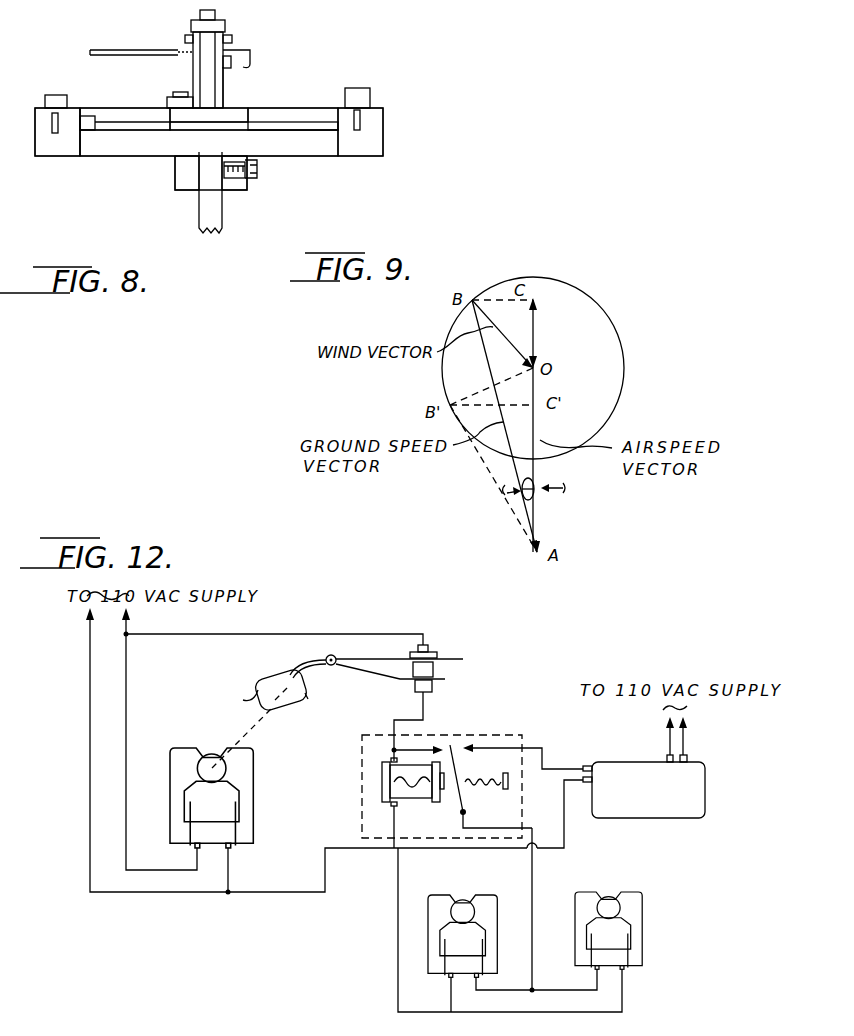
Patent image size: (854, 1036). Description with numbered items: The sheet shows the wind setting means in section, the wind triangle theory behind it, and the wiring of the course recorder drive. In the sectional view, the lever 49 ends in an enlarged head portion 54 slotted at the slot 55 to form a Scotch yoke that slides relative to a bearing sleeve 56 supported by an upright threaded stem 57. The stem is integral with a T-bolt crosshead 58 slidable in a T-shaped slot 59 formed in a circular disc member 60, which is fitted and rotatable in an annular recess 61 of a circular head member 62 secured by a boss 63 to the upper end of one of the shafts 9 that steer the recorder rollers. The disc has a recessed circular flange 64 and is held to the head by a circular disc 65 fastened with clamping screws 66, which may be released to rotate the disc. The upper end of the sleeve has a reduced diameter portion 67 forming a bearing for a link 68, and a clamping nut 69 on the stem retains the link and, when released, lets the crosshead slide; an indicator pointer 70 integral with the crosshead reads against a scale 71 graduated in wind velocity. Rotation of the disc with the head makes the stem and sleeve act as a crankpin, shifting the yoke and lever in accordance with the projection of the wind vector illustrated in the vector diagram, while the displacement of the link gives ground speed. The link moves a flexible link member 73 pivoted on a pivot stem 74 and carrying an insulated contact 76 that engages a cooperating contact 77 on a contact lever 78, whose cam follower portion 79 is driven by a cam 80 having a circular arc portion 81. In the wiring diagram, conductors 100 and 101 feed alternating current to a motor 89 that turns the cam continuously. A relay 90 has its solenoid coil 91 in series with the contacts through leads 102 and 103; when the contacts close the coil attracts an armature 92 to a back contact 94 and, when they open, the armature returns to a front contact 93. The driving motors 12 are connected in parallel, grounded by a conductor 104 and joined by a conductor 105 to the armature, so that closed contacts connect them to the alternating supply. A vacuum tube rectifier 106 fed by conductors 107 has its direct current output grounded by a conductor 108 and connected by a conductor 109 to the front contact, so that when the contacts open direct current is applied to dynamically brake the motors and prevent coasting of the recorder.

In FIG. 8, the shaft 9 is at (220, 210).
In FIG. 8, the lever 49 is at (140, 45).
In FIG. 8, the head portion 54 is at (252, 60).
In FIG. 8, the slot 55 is at (227, 60).
In FIG. 8, the bearing sleeve 56 is at (224, 80).
In FIG. 8, the threaded stem 57 is at (197, 62).
In FIG. 8, the crosshead 58 is at (262, 108).
In FIG. 8, the T-shaped slot 59 is at (160, 156).
In FIG. 8, the circular disc member 60 is at (112, 118).
In FIG. 8, the annular recess 61 is at (80, 150).
In FIG. 8, the circular head member 62 is at (56, 156).
In FIG. 8, the boss 63 is at (180, 175).
In FIG. 8, the recessed circular flange 64 is at (108, 110).
In FIG. 8, the circular disc 65 is at (90, 114).
In FIG. 8, the clamping screws 66 is at (56, 95).
In FIG. 8, the reduced diameter portion 67 is at (232, 38).
In FIG. 8, the link 68 is at (233, 42).
In FIG. 8, the clamping nut 69 is at (225, 22).
In FIG. 8, the indicator pointer 70 is at (185, 96).
In FIG. 8, the scale 71 is at (172, 104).
In FIG. 12, the driving motors 12 is at (488, 922).
In FIG. 12, the flexible link member 73 is at (374, 658).
In FIG. 12, the pivot stem 74 is at (334, 655).
In FIG. 12, the insulated contact 76 is at (463, 660).
In FIG. 12, the cooperating contact 77 is at (448, 676).
In FIG. 12, the contact lever 78 is at (372, 675).
In FIG. 12, the cam follower portion 79 is at (303, 665).
In FIG. 12, the cam 80 is at (283, 680).
In FIG. 12, the circular arc portion 81 is at (276, 700).
In FIG. 12, the motor 89 is at (240, 778).
In FIG. 12, the relay 90 is at (498, 733).
In FIG. 12, the solenoid coil 91 is at (405, 803).
In FIG. 12, the armature 92 is at (468, 806).
In FIG. 12, the front contact 93 is at (470, 776).
In FIG. 12, the back contact 94 is at (400, 742).
In FIG. 12, the conductor 100 is at (90, 651).
In FIG. 12, the conductor 101 is at (126, 651).
In FIG. 12, the lead 102 is at (229, 893).
In FIG. 12, the lead 103 is at (262, 633).
In FIG. 12, the conductor 104 is at (398, 935).
In FIG. 12, the conductor 105 is at (534, 875).
In FIG. 12, the rectifier 106 is at (640, 815).
In FIG. 12, the conductors 107 is at (672, 742).
In FIG. 12, the conductor 108 is at (565, 837).
In FIG. 12, the conductor 109 is at (565, 767).